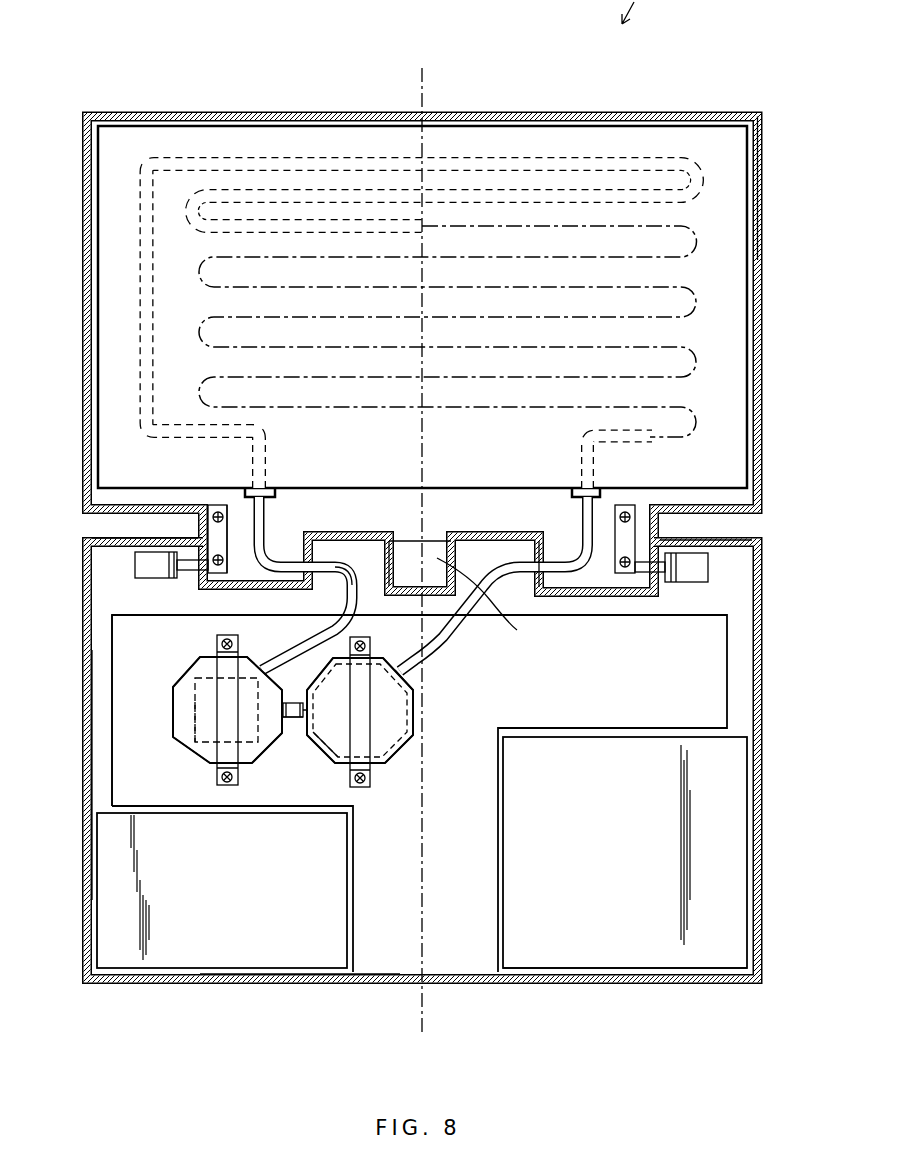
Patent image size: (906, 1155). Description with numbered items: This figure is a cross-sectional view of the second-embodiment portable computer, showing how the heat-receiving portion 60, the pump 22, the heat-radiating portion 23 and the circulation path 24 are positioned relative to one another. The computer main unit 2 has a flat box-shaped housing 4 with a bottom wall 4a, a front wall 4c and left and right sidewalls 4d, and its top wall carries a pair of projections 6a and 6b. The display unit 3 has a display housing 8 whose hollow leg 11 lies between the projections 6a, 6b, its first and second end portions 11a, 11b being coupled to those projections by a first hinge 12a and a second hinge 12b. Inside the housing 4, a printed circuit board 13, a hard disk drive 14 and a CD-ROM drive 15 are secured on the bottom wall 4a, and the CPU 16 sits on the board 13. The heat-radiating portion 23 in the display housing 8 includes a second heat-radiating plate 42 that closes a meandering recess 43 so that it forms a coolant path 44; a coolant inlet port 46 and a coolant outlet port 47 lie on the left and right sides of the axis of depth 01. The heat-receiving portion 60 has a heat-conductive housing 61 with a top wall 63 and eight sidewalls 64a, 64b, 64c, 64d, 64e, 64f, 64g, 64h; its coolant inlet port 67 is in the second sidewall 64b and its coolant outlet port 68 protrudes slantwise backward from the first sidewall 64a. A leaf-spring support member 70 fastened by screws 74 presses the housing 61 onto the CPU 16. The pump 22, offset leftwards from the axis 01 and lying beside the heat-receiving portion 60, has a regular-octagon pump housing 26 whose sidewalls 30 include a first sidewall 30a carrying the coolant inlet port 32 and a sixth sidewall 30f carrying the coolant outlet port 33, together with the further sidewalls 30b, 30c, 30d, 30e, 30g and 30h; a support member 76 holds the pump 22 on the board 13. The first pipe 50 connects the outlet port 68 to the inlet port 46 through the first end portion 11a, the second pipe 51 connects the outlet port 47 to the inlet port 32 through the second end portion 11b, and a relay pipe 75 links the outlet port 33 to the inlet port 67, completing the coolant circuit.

The computer main unit 2 is at (120, 986).
The display unit 3 is at (727, 105).
The housing 4 is at (705, 988).
The bottom wall 4a is at (92, 760).
The front wall 4c is at (302, 986).
The left and right sidewalls 4d is at (85, 695).
The first projection 6a is at (120, 536).
The second projection 6b is at (722, 540).
The display housing 8 is at (176, 111).
The axis of depth 01 is at (417, 940).
The leg 11 is at (490, 603).
The first end portion 11a is at (240, 535).
The second end portion 11b is at (603, 560).
The first hinge 12a is at (135, 563).
The second hinge 12b is at (673, 572).
The printed circuit board 13 is at (488, 866).
The hard disk drive 14 is at (212, 953).
The CD-ROM drive 15 is at (597, 953).
The CPU 16 is at (193, 727).
The pump 22 is at (390, 745).
The heat-radiating portion 23 is at (384, 124).
The circulation path 24 is at (512, 446).
The pump housing 26 is at (393, 737).
The second compressor housing 30 is at (360, 710).
The first sidewall 30a is at (408, 679).
The housing right side 30b is at (414, 706).
The housing lower right side 30c is at (410, 744).
The housing lower left side 30d is at (378, 770).
The housing left side 30e is at (333, 758).
The sixth sidewall 30f is at (316, 747).
The refrigerant pipe 30g is at (338, 625).
The housing top 30h is at (373, 656).
The coolant inlet port 32 is at (413, 661).
The coolant outlet port 33 is at (310, 712).
The second heat-radiating plate 42 is at (724, 342).
The recess 43 is at (538, 158).
The coolant path 44 is at (300, 158).
The coolant inlet port 46 is at (262, 495).
The coolant outlet port 47 is at (592, 495).
The first pipe 50 is at (395, 538).
The second pipe 51 is at (506, 560).
The heat-receiving portion 60 is at (173, 712).
The housing 61 is at (186, 670).
The top wall 63 is at (205, 715).
The first sidewall 64a is at (262, 662).
The second sidewall 64b is at (267, 775).
The third sidewall 64c is at (256, 770).
The fourth sidewall 64d is at (237, 793).
The fifth sidewall 64e is at (200, 752).
The sixth sidewall 64f is at (190, 700).
The seventh sidewall 64g is at (196, 662).
The eighth sidewall 64h is at (243, 650).
The coolant inlet port 67 is at (292, 719).
The coolant outlet port 68 is at (295, 645).
The support member 70 is at (225, 747).
The screws 74 is at (226, 640).
The relay pipe 75 is at (293, 701).
The support member 76 is at (366, 682).